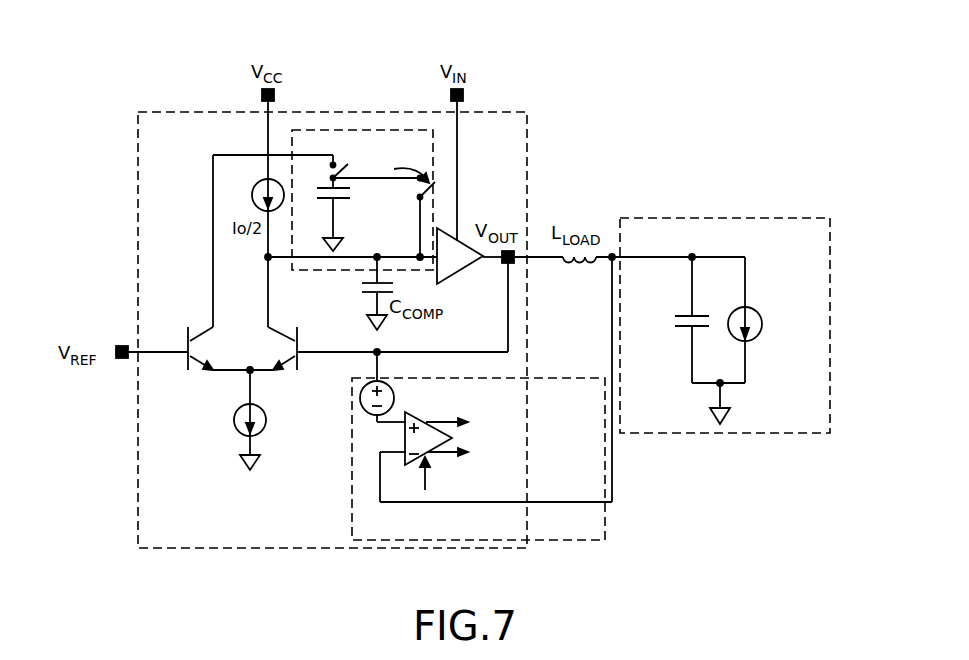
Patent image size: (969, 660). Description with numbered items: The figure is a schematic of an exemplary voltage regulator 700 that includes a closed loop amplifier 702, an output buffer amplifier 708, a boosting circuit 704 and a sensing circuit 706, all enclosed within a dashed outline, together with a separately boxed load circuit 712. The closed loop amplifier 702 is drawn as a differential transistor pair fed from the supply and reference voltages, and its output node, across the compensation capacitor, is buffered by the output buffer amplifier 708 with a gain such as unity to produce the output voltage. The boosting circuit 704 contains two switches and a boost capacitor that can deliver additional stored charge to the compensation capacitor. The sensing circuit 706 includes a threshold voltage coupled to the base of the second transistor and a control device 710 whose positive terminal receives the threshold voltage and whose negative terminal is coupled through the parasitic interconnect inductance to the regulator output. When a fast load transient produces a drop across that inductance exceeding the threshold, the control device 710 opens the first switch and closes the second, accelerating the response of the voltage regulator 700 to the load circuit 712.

The voltage regulator 700 is at (541, 167).
The closed loop amplifier 702 is at (198, 322).
The boosting circuit 704 is at (432, 166).
The sensing circuit 706 is at (607, 450).
The output buffer amplifier 708 is at (455, 240).
The control device 710 is at (426, 421).
The load circuit 712 is at (712, 212).